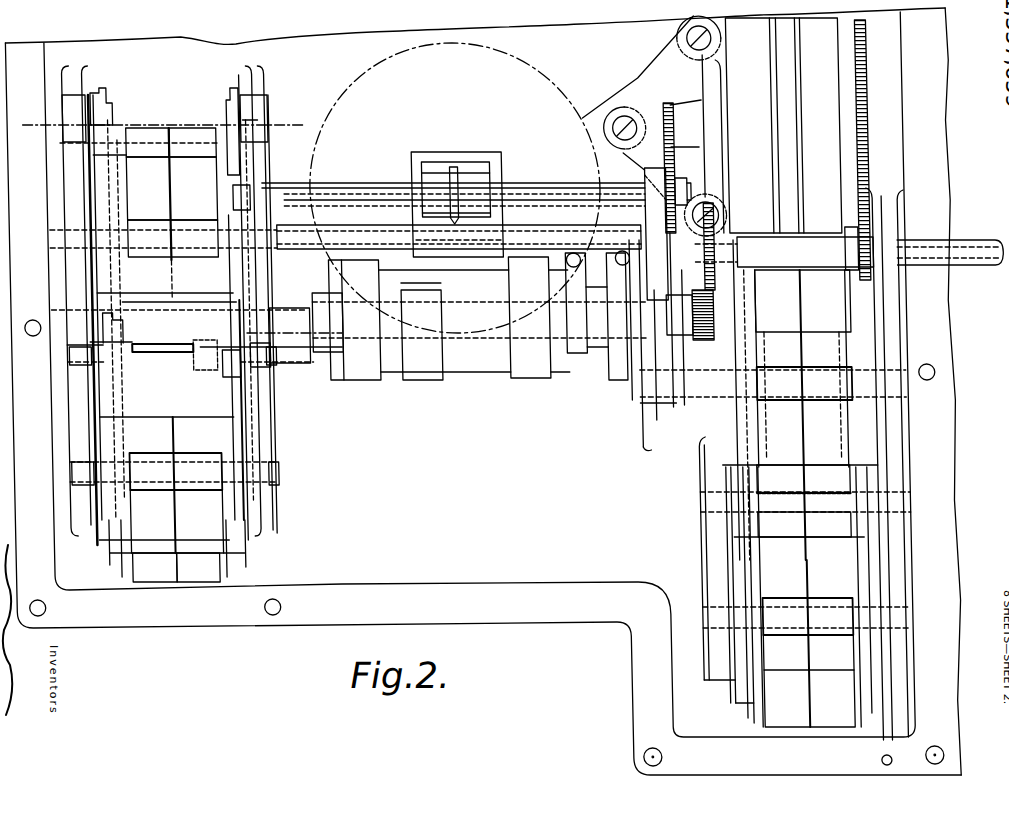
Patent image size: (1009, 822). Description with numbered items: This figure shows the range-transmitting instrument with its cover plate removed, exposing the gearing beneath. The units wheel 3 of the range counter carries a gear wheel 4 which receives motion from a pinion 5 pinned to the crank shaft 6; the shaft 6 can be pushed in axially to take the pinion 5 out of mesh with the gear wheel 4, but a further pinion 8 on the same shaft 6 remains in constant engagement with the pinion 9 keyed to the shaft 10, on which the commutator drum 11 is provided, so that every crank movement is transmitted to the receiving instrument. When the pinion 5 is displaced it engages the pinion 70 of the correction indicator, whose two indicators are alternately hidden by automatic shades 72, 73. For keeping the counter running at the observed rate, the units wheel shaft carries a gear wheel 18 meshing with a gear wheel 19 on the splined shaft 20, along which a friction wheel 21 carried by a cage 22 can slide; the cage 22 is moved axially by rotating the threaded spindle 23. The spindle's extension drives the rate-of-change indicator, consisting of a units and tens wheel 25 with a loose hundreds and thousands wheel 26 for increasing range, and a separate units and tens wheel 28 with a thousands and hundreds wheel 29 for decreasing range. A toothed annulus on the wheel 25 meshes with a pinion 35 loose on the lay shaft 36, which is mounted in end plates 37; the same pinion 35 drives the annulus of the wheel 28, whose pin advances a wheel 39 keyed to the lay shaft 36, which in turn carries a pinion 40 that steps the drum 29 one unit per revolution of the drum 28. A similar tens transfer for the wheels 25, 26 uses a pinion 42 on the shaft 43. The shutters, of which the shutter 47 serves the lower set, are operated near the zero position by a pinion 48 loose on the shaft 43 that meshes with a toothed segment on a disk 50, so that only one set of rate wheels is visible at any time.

The units wheel 3 is at (783, 125).
The gear wheel 4 is at (867, 133).
The pinion 5 is at (889, 257).
The shaft 6 is at (784, 248).
The pinion 8 is at (726, 230).
The pinion 9 is at (696, 343).
The shaft 10 is at (290, 325).
The commutator drum 11 is at (526, 370).
The gear wheel 18 is at (666, 101).
The gear wheel 19 is at (673, 172).
The splined shaft 20 is at (338, 183).
The friction wheel 21 is at (433, 173).
The cage 22 is at (413, 178).
The threaded spindle 23 is at (290, 238).
The units and tens wheel 25 is at (185, 133).
The hundreds and thousands wheel 26 is at (142, 133).
The units and tens wheel 28 is at (190, 572).
The thousands and hundreds wheel 29 is at (141, 572).
The pinion 35 is at (216, 380).
The lay shaft 36 is at (155, 357).
The end plates 37 is at (69, 282).
The wheel 39 is at (236, 368).
The pinion 40 is at (116, 335).
The pinion 42 is at (221, 107).
The shaft 43 is at (254, 132).
The shutter 47 is at (280, 514).
The pinion 48 is at (98, 115).
The disk 50 is at (84, 183).
The pinion 70 is at (847, 305).
The automatic shade 72 is at (858, 435).
The automatic shade 73 is at (850, 568).